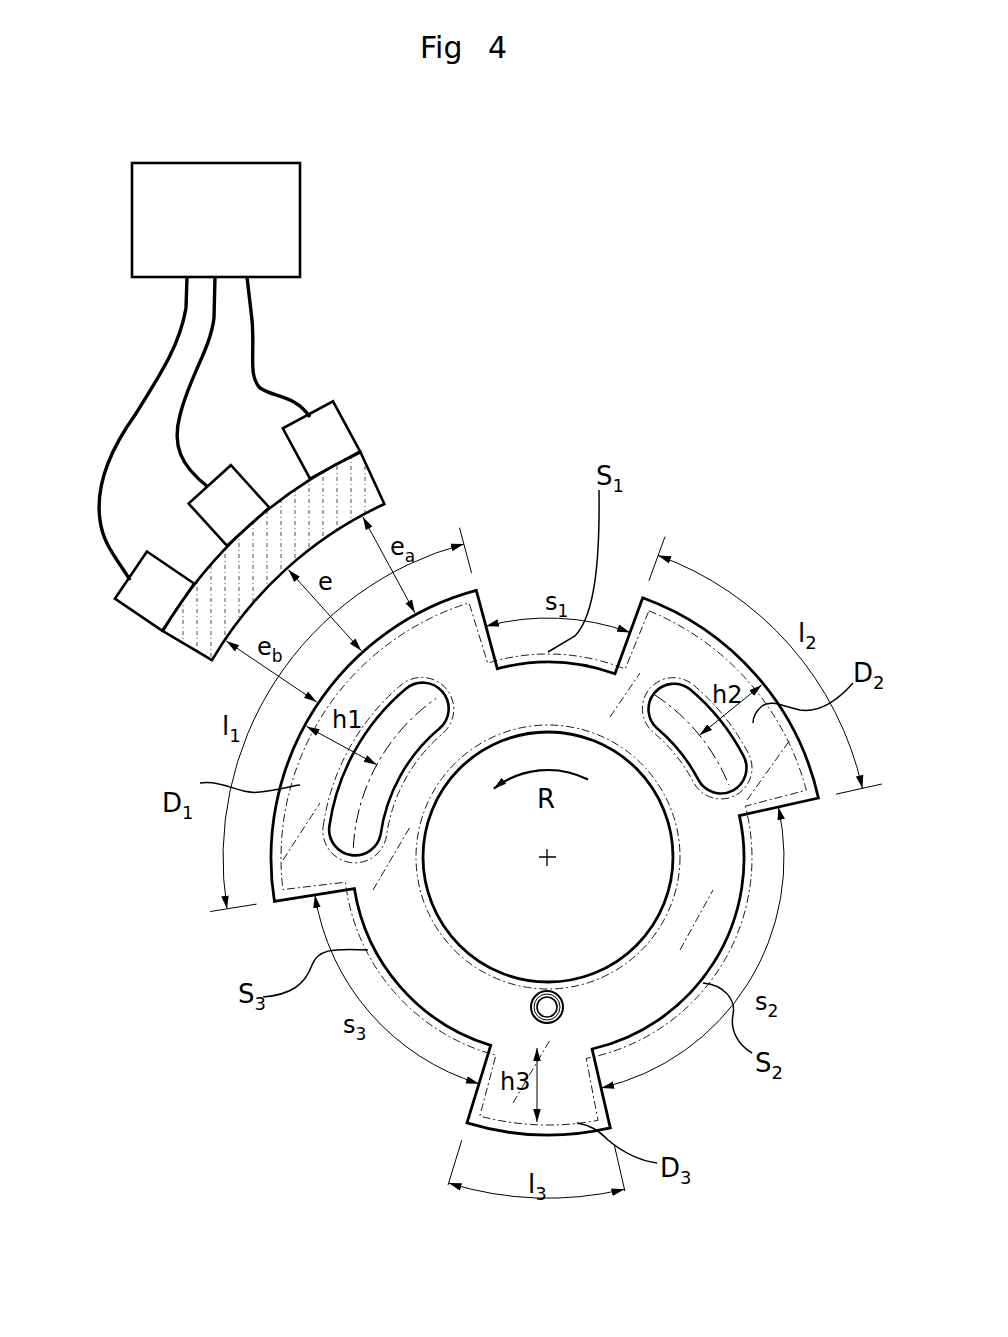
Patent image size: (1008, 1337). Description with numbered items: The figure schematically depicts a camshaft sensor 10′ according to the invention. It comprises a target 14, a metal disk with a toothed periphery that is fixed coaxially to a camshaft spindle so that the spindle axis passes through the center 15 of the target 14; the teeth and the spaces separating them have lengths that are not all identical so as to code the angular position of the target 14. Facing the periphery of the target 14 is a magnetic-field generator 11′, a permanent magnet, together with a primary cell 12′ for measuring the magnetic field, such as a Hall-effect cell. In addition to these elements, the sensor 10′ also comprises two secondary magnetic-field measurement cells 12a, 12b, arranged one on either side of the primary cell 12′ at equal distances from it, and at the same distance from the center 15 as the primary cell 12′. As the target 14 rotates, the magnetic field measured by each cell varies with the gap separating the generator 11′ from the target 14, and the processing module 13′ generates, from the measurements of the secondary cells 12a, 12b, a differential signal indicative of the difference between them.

The camshaft sensor 10′ is at (614, 362).
The magnetic-field generator 11′ is at (355, 492).
The primary cell 12′ is at (218, 517).
The secondary magnetic-field measurement cell 12a is at (333, 443).
The secondary magnetic-field measurement cell 12b is at (158, 608).
The processing module 13′ is at (280, 245).
The target 14 is at (708, 902).
The center 15 is at (551, 860).